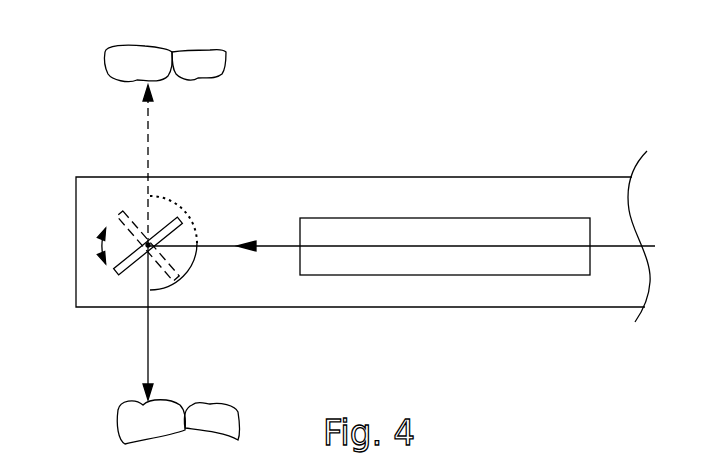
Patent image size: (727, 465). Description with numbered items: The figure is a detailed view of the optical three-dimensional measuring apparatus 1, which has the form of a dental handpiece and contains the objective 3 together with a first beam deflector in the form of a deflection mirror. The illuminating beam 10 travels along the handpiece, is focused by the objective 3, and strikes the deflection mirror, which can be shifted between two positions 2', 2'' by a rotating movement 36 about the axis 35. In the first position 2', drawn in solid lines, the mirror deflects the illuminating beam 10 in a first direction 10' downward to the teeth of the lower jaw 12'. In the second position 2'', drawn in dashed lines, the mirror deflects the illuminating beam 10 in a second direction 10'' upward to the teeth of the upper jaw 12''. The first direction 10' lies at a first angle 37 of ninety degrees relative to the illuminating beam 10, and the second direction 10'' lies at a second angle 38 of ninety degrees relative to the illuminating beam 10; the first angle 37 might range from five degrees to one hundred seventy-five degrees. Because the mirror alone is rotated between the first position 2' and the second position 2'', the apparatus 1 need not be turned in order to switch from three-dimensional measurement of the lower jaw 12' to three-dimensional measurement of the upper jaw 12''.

The optical 3 D measuring apparatus 1 is at (528, 128).
The objective 3 is at (368, 232).
The radiated light beam 10 is at (401, 190).
The first direction 10' is at (184, 323).
The second direction 10'' is at (185, 165).
The teeth of the lower jaw 12' is at (141, 413).
The teeth of the upper jaw 12'' is at (165, 41).
The first position of the first beam deflector 2' is at (130, 291).
The second position of the first beam deflector 2'' is at (124, 204).
The axis 35 is at (144, 224).
The rotating movement 36 is at (100, 246).
The first angle 37 is at (197, 268).
The second angle 38 is at (192, 220).